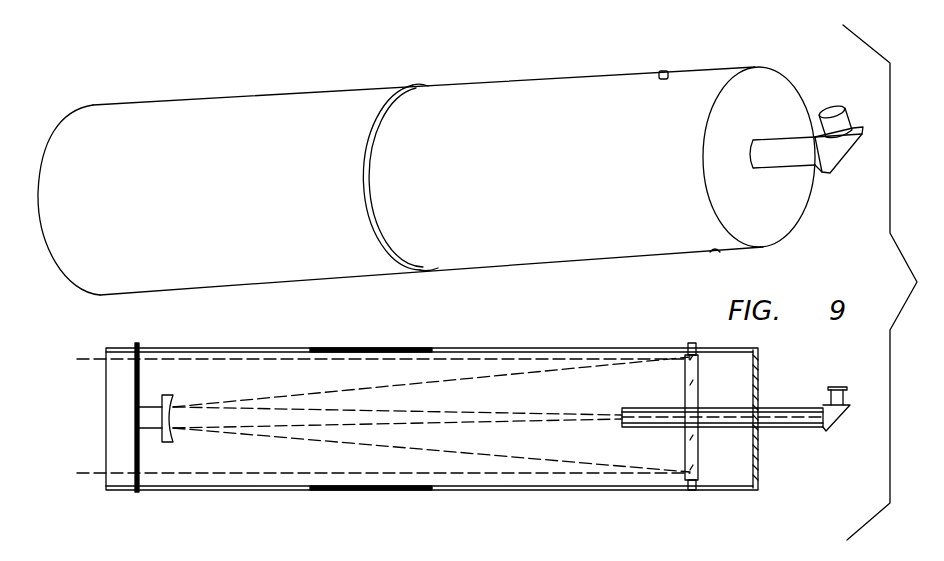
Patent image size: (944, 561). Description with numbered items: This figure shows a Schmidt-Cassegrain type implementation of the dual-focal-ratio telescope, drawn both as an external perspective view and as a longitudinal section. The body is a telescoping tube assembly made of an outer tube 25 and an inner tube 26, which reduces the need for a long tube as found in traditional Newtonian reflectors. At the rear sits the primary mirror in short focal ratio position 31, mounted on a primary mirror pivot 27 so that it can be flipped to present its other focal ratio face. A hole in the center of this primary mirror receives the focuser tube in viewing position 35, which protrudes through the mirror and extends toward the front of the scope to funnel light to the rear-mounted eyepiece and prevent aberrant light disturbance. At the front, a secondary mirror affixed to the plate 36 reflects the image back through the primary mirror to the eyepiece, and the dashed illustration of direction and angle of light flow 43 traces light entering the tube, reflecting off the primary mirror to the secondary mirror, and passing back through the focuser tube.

The outer tube of a telescoping tube assembly 25 is at (213, 487).
The inner tube of a telescoping tube assembly 26 is at (485, 350).
The primary mirror pivot 27 is at (663, 70).
The primary mirror in short focal ratio position 31 is at (682, 387).
The focuser tube in viewing position 35 is at (785, 137).
The secondary mirror affixed to the plate at the front of a Schmidt Cassegrain type 36 is at (157, 418).
The illustration of direction and angle of light flow through a telescope 43 is at (327, 390).